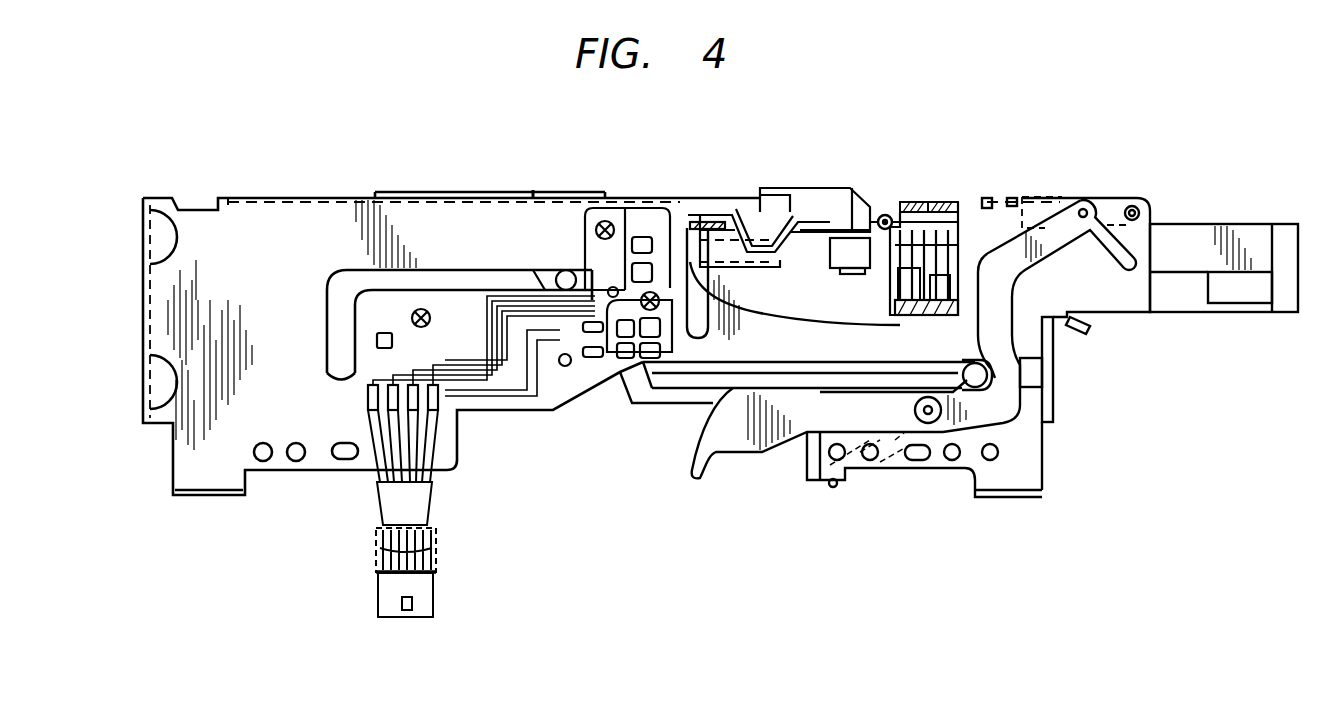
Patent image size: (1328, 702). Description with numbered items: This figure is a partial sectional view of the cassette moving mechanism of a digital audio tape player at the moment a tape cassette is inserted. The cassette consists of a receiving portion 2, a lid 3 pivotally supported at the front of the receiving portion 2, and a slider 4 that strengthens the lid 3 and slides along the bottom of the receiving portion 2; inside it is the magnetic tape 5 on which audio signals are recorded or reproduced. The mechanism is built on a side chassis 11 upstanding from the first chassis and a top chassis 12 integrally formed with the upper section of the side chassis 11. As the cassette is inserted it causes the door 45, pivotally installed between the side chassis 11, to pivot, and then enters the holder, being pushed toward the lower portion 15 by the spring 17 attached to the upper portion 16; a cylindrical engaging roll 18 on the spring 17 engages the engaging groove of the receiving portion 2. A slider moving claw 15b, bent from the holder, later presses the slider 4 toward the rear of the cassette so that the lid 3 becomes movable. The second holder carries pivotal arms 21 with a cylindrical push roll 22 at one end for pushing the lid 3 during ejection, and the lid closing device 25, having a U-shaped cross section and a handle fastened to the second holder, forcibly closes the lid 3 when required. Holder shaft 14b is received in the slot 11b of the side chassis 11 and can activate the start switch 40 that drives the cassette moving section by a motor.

The receiving portion 2 is at (1298, 234).
The lid 3 is at (900, 308).
The slider 4 is at (1193, 313).
The magnetic tape 5 is at (880, 280).
The side chassis 11 is at (250, 215).
The slot 11b is at (328, 312).
The top chassis 12 is at (322, 198).
The holder shaft 14b is at (566, 270).
The lower portion 15 is at (923, 316).
The slider moving claw 15b is at (900, 290).
The upper portion 16 is at (912, 202).
The spring 17 is at (947, 210).
The engaging roll 18 is at (887, 214).
The pivotal arm 21 is at (820, 215).
The cylindrical push roll 22 is at (846, 238).
The lid closing device 25 is at (702, 216).
The start switch 40 is at (620, 226).
The door 45 is at (1030, 196).